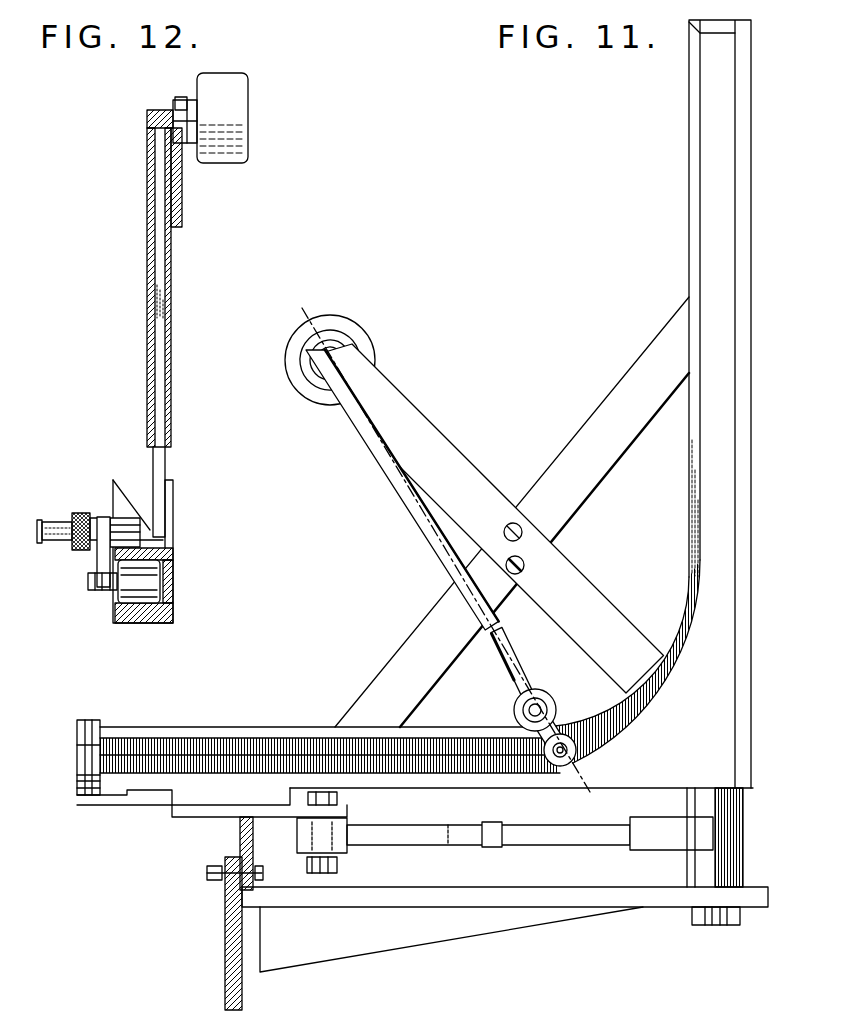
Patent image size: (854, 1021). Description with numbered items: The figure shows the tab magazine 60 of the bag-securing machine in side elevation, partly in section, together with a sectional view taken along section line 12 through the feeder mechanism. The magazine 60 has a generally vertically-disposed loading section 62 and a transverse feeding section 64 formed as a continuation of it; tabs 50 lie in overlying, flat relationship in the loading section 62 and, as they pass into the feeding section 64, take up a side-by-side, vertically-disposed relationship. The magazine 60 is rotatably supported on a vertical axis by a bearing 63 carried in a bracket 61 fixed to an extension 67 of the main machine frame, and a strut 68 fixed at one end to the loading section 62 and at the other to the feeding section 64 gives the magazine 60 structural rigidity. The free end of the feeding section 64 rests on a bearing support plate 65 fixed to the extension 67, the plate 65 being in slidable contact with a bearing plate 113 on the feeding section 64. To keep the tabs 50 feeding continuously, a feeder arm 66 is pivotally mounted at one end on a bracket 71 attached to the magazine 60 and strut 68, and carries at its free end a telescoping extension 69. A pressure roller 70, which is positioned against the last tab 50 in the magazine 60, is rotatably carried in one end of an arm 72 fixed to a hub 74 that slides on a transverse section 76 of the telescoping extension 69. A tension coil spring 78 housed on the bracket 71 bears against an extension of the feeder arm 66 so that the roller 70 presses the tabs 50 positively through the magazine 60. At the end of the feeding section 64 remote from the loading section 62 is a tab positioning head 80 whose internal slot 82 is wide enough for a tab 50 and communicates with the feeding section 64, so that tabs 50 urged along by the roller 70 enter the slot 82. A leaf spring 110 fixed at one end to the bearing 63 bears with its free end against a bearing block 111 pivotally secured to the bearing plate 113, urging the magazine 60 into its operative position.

In FIG. 11, the section line 12- 12 is at (302, 308).
In FIG. 11, the tab 50 is at (298, 773).
In FIG. 12, the tab 50 is at (165, 571).
In FIG. 11, the magazine 60 is at (645, 404).
In FIG. 12, the magazine 60 is at (141, 523).
In FIG. 11, the bracket 61 is at (448, 894).
In FIG. 11, the loading section 62 is at (693, 153).
In FIG. 11, the bearing 63 is at (696, 863).
In FIG. 11, the feeding section 64 is at (426, 737).
In FIG. 12, the feeding section 64 is at (113, 491).
In FIG. 11, the bearing support plate 65 is at (254, 848).
In FIG. 11, the feeder arm 66 is at (425, 522).
In FIG. 12, the feeder arm 66 is at (147, 265).
In FIG. 11, the extension of the main machine frame 67 is at (226, 986).
In FIG. 11, the strut 68 is at (633, 377).
In FIG. 11, the telescoping extension 69 is at (512, 666).
In FIG. 12, the telescoping extension 69 is at (163, 459).
In FIG. 11, the pressure roller 70 is at (577, 740).
In FIG. 12, the pressure roller 70 is at (154, 569).
In FIG. 11, the bracket 71 is at (562, 572).
In FIG. 12, the bracket 71 is at (182, 201).
In FIG. 11, the arm 72 is at (559, 720).
In FIG. 12, the arm 72 is at (100, 562).
In FIG. 11, the hub 74 is at (514, 710).
In FIG. 12, the hub 74 is at (67, 510).
In FIG. 12, the transverse section 76 is at (150, 528).
In FIG. 11, the tension coil spring 78 is at (365, 351).
In FIG. 12, the tension coil spring 78 is at (241, 108).
In FIG. 11, the tab positioning head 80 is at (105, 734).
In FIG. 11, the internal slot 82 is at (84, 746).
In FIG. 11, the leaf spring 110 is at (431, 828).
In FIG. 11, the bearing block 111 is at (343, 850).
In FIG. 11, the bearing plate 113 is at (213, 810).